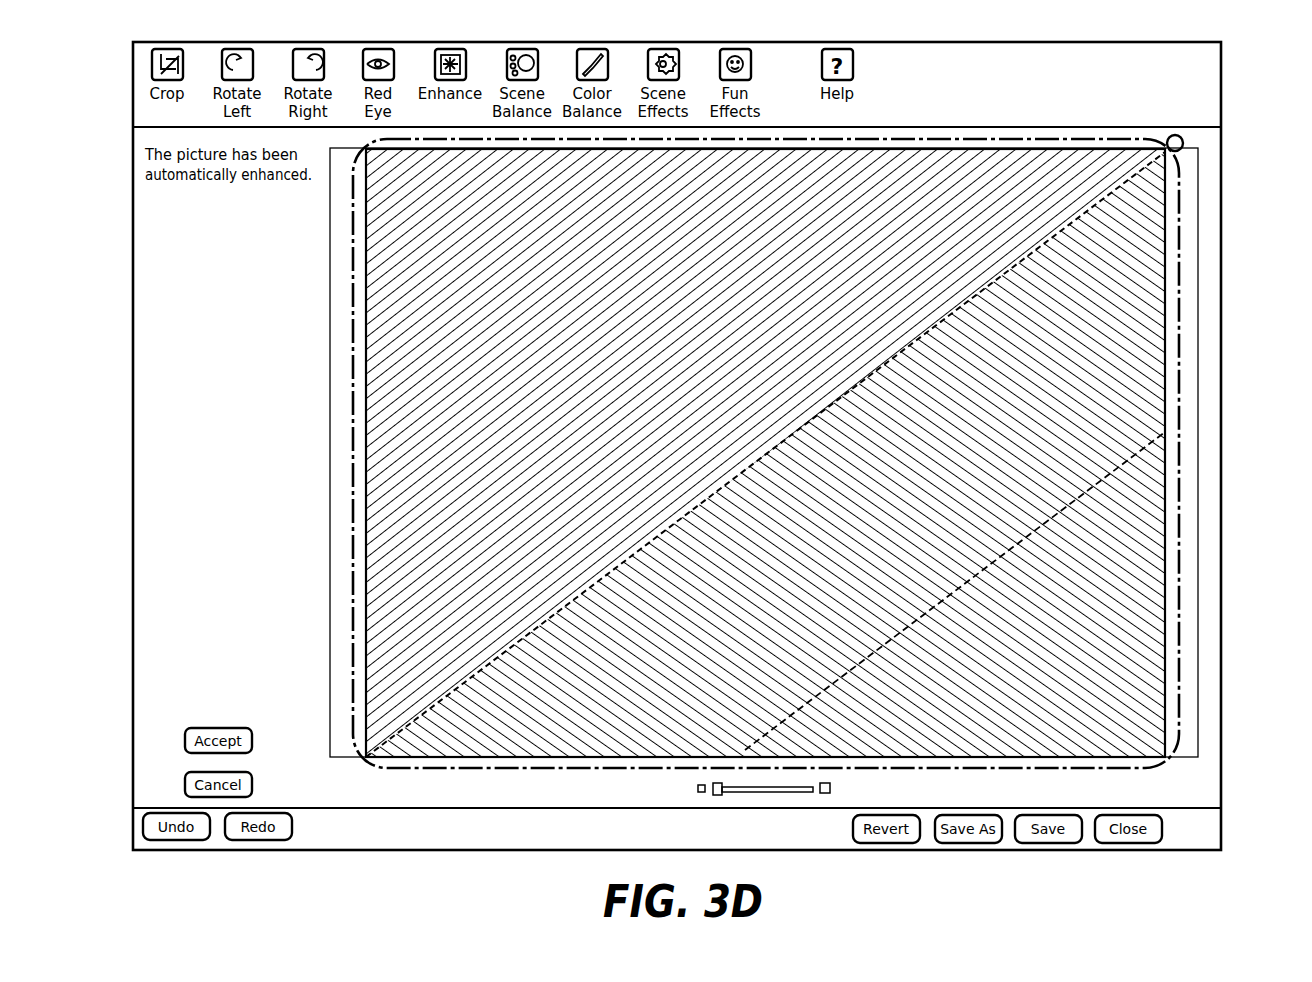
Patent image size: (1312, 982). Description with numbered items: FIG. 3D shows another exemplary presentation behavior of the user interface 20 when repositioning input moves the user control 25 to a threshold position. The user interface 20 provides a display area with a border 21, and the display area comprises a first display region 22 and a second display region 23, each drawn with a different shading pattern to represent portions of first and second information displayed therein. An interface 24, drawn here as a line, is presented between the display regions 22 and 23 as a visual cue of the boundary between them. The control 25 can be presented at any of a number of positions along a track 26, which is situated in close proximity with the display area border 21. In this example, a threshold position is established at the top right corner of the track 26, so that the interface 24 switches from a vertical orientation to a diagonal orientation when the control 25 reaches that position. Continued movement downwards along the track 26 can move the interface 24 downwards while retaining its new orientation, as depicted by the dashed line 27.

The user interface 20 is at (120, 248).
The border 21 is at (489, 148).
The first display region 22 is at (705, 182).
The second display region 23 is at (1137, 252).
The interface 24 is at (1130, 200).
The user control 25 is at (1180, 137).
The track 26 is at (1184, 377).
The dashed line 27 is at (1097, 506).